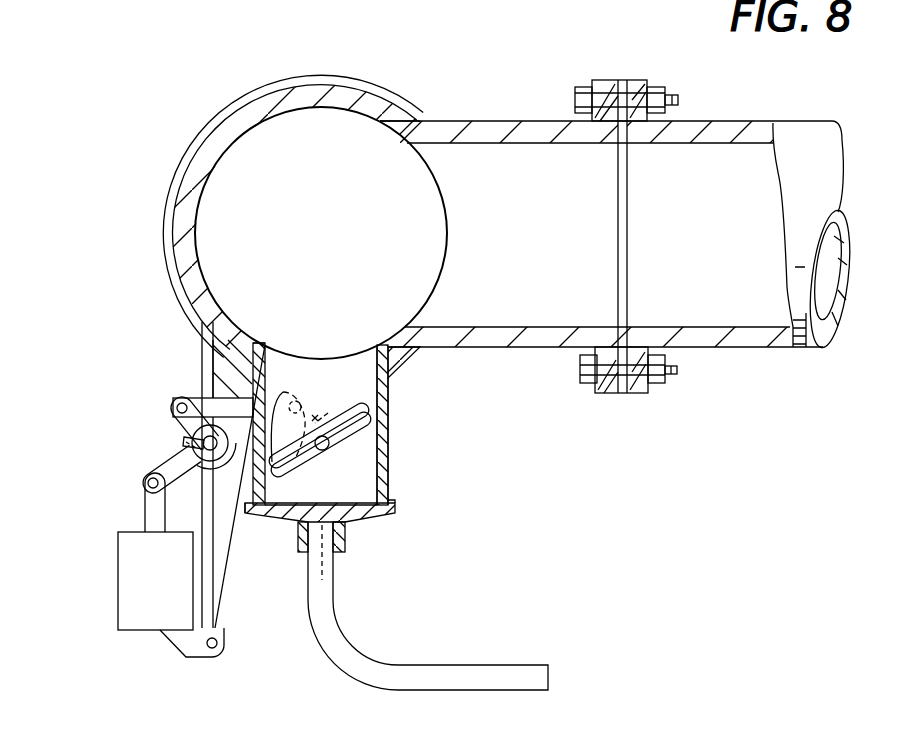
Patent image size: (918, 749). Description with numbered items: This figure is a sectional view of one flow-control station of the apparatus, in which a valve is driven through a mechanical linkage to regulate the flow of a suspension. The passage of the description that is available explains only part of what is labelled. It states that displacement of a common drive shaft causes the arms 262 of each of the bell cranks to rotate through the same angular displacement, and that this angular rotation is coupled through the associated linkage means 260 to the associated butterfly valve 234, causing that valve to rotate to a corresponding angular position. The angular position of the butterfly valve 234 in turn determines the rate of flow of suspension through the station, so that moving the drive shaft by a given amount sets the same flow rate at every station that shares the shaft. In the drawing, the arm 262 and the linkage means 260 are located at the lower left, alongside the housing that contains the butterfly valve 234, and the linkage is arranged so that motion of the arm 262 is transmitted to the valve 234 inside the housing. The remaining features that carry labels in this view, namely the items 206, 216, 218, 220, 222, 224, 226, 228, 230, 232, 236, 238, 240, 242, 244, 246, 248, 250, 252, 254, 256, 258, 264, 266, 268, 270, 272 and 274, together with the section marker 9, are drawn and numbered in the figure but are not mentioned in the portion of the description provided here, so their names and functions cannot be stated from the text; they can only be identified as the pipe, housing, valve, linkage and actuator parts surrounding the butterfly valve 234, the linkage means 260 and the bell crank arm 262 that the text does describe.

The section line 9- 9 is at (322, 320).
The valve housing 206 is at (395, 425).
The pipe 216 is at (731, 128).
The bolted flange 218 is at (632, 84).
The pipe wall 220 is at (497, 130).
The cylindrical housing wall 222 is at (283, 92).
The junction of pipe and housing 224 is at (412, 121).
The cylindrical chamber 226 is at (345, 118).
The housing side wall 228 is at (389, 437).
The valve chamber 230 is at (363, 455).
The outlet end 232 is at (497, 667).
The butterfly valve 234 is at (392, 413).
The fillet 236 is at (392, 382).
The opening to chamber 238 is at (392, 346).
The bottom plate 240 is at (397, 511).
The outlet fitting 242 is at (343, 541).
The outlet tube 244 is at (350, 648).
The bottom wall portion 246 is at (278, 505).
The valve flap 248 is at (299, 414).
The valve plate 250 is at (340, 455).
The actuator 252 is at (155, 603).
The actuator housing 254 is at (120, 555).
The slot 256 is at (172, 432).
The hatched wall 258 is at (252, 372).
The linkage means 260 is at (203, 395).
The arm 262 is at (170, 420).
The pin 264 is at (187, 443).
The lever 266 is at (175, 390).
The brace 268 is at (227, 400).
The rod 270 is at (145, 508).
The foot 272 is at (213, 612).
The link 274 is at (157, 467).